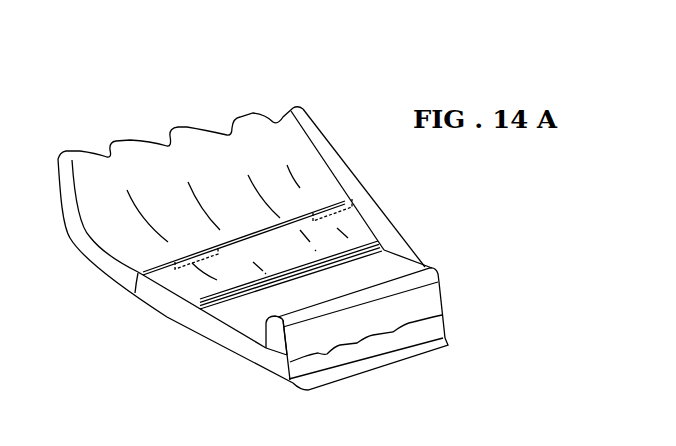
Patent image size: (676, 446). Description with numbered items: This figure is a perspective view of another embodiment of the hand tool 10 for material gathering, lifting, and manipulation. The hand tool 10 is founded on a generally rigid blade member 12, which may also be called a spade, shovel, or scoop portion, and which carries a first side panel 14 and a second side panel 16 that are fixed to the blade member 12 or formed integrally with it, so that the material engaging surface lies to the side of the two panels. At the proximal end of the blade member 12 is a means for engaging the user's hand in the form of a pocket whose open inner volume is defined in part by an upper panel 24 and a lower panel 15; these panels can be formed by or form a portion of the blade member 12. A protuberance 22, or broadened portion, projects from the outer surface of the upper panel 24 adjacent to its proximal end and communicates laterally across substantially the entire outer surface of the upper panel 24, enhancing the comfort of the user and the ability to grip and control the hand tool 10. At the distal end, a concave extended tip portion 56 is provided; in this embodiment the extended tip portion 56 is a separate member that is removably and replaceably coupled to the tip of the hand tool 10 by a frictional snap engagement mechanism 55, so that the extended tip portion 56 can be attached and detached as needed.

The hand tool 10 is at (76, 132).
The blade member 12 is at (442, 336).
The first side panel 14 is at (175, 310).
The lower panel 15 is at (358, 370).
The second side panel 16 is at (376, 207).
The protuberance 22 is at (437, 266).
The upper panel 24 is at (319, 291).
The frictional snap engagement mechanism 55 is at (347, 196).
The extended tip portion 56 is at (170, 127).